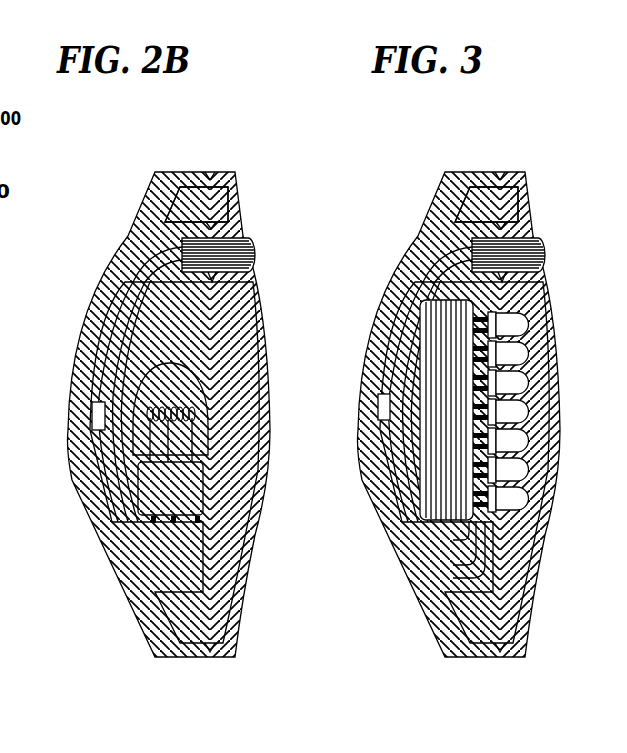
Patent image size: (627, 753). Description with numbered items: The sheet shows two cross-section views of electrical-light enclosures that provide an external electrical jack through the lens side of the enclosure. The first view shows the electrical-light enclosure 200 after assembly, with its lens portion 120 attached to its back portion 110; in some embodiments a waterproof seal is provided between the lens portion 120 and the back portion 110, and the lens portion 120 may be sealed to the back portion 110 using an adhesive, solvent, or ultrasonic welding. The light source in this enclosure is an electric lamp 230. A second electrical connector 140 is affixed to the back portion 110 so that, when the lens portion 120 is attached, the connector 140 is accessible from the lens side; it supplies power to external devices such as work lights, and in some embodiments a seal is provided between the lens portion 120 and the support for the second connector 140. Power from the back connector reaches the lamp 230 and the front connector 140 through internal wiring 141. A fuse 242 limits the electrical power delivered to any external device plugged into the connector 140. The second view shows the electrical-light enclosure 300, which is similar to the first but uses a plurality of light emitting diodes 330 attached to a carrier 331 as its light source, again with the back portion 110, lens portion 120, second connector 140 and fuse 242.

In FIG. 2B, the electrical-light enclosure 200 is at (238, 150).
In FIG. 3, the electrical-light enclosure 300 is at (528, 150).
In FIG. 2B, the back portion 110 is at (130, 238).
In FIG. 3, the back portion 110 is at (450, 414).
In FIG. 2B, the lens portion 120 is at (242, 211).
In FIG. 3, the lens portion 120 is at (532, 211).
In FIG. 2B, the second electrical connector 140 is at (197, 283).
In FIG. 3, the second electrical connector 140 is at (544, 241).
In FIG. 2B, the internal wiring 141 is at (121, 365).
In FIG. 2B, the electric lamp 230 is at (190, 370).
In FIG. 2B, the fuse 242 is at (97, 418).
In FIG. 3, the fuse 242 is at (385, 414).
In FIG. 3, the carrier 331 is at (473, 296).
In FIG. 3, the light emitting diodes 330 is at (528, 355).